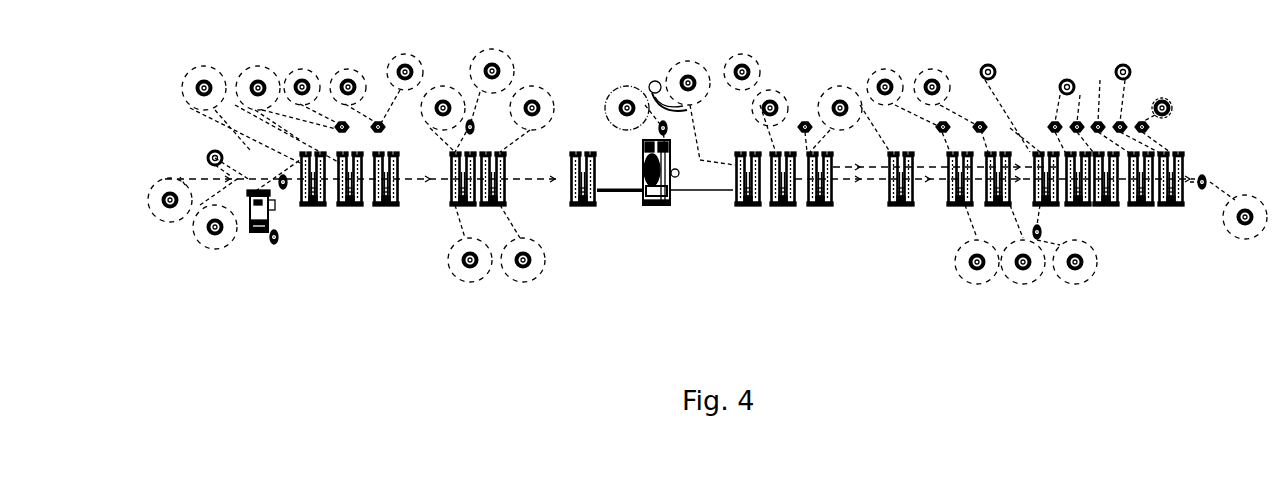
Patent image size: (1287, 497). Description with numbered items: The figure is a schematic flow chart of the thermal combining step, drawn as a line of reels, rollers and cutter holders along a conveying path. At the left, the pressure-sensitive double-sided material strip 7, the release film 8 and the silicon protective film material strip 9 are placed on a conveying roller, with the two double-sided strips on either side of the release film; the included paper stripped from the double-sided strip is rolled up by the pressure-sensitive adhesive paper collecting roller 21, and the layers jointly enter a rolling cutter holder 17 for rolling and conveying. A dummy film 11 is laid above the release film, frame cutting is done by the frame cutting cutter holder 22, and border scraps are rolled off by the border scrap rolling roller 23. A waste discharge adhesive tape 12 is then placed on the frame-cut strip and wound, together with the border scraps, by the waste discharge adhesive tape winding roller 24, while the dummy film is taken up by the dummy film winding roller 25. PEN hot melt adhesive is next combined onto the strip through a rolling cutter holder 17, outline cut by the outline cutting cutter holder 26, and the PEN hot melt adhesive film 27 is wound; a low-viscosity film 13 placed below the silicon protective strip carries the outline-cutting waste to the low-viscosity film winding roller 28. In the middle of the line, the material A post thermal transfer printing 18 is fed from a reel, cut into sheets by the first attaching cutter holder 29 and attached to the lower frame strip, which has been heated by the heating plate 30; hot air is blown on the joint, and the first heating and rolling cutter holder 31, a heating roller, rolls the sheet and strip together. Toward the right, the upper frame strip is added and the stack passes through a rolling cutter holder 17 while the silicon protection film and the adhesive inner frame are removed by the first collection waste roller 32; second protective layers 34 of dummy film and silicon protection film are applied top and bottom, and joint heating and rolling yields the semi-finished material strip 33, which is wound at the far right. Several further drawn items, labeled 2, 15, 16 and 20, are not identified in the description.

The production line 2 is at (507, 190).
The pressure-sensitive double-sided material strip 7 is at (267, 66).
The release film 8 is at (150, 193).
The silicon protective film material strip 9 is at (206, 242).
The dummy film 11 is at (340, 122).
The waste discharge adhesive tape 12 is at (348, 69).
The low-viscosity film 13 is at (456, 272).
The roller 15 is at (804, 120).
The reel 16 is at (492, 49).
The rolling cutter holder 17 is at (313, 207).
The material A post thermal transfer printing 18 is at (683, 60).
The reel 20 is at (443, 86).
The pressure-sensitive adhesive paper collecting roller 21 is at (207, 158).
The frame cutting cutter holder 22 is at (350, 207).
The border scrap rolling roller 23 is at (376, 122).
The waste discharge adhesive tape winding roller 24 is at (405, 54).
The dummy film winding roller 25 is at (302, 69).
The outline cutting cutter holder 26 is at (583, 207).
The PEN hot melt adhesive film 27 is at (532, 86).
The low-viscosity film winding roller 28 is at (528, 262).
The first attaching cutter holder 29 is at (658, 207).
The heating plate 30 is at (620, 193).
The first heating and rolling cutter holder 31 is at (745, 207).
The first collection waste roller 32 is at (968, 265).
The semi-finished material strip 33 is at (1248, 195).
The second protective layers 34 is at (1152, 125).